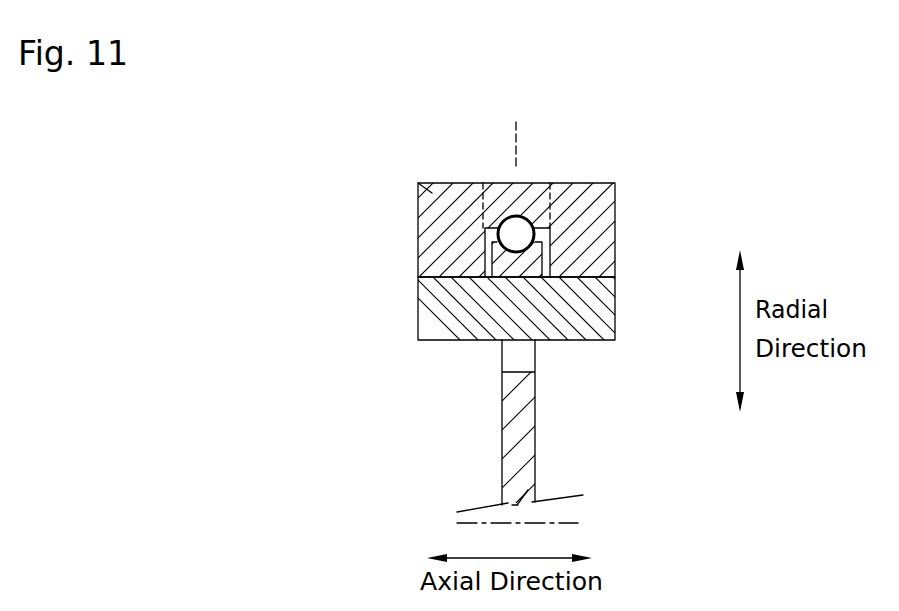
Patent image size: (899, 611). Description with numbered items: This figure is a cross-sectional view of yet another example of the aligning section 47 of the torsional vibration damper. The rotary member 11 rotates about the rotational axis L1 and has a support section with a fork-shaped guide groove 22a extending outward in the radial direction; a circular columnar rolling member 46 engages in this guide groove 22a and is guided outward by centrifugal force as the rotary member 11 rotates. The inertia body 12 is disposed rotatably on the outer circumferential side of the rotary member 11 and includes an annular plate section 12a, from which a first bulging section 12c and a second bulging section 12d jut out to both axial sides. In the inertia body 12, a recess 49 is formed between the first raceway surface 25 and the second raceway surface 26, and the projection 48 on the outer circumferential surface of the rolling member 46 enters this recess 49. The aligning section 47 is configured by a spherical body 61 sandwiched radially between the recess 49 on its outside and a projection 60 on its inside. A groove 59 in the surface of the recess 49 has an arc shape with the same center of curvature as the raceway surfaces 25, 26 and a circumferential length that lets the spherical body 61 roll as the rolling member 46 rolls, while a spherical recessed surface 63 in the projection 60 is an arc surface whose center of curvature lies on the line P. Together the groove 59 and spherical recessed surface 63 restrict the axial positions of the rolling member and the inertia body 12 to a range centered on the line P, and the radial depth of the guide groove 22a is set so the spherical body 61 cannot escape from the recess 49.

The rotary member 11 is at (527, 420).
The inertia body 12 is at (615, 197).
The annular plate section 12a is at (504, 195).
The first bulging section 12c is at (418, 184).
The second bulging section 12d is at (592, 193).
The guide groove 22a is at (518, 357).
The first raceway surface 25 is at (426, 287).
The second raceway surface 26 is at (592, 277).
The rolling member 46 is at (597, 315).
The aligning section 47 is at (551, 233).
The projection 48 is at (485, 258).
The recess 49 is at (488, 228).
The groove 59 is at (517, 236).
The projection 60 is at (513, 263).
The spherical body 61 is at (551, 212).
The spherical recessed surface 63 is at (507, 257).
The line P is at (514, 128).
The rotational axis L1 is at (563, 523).